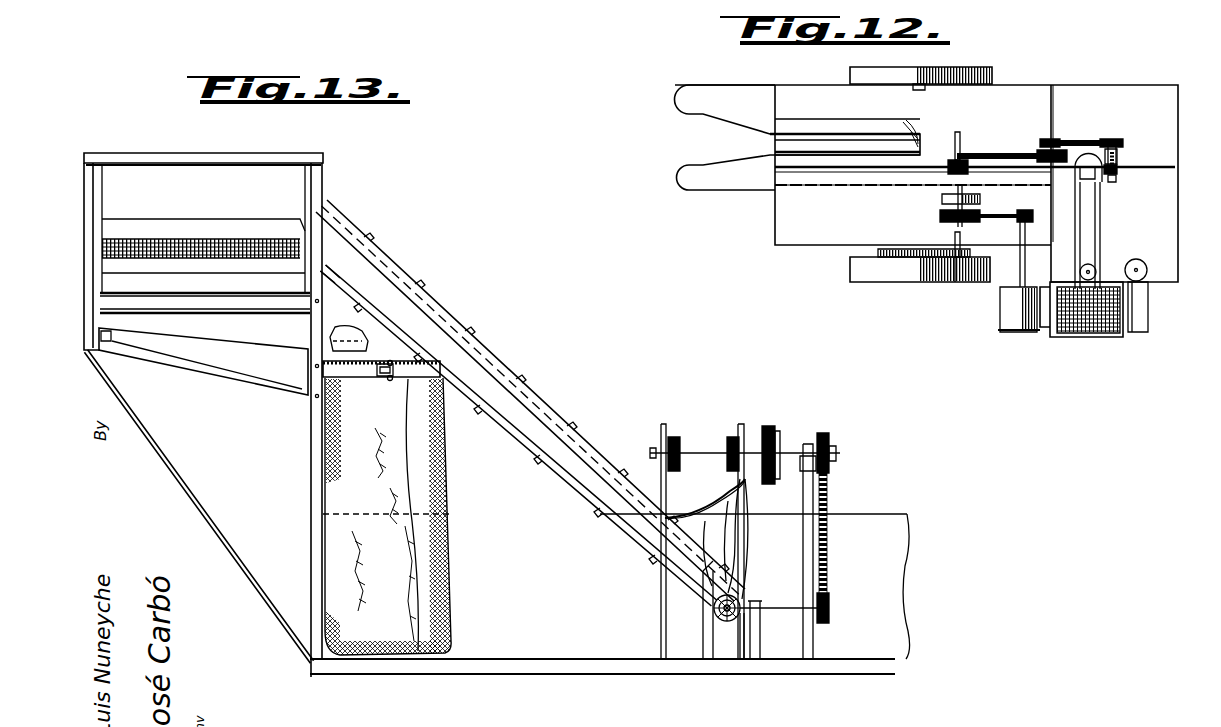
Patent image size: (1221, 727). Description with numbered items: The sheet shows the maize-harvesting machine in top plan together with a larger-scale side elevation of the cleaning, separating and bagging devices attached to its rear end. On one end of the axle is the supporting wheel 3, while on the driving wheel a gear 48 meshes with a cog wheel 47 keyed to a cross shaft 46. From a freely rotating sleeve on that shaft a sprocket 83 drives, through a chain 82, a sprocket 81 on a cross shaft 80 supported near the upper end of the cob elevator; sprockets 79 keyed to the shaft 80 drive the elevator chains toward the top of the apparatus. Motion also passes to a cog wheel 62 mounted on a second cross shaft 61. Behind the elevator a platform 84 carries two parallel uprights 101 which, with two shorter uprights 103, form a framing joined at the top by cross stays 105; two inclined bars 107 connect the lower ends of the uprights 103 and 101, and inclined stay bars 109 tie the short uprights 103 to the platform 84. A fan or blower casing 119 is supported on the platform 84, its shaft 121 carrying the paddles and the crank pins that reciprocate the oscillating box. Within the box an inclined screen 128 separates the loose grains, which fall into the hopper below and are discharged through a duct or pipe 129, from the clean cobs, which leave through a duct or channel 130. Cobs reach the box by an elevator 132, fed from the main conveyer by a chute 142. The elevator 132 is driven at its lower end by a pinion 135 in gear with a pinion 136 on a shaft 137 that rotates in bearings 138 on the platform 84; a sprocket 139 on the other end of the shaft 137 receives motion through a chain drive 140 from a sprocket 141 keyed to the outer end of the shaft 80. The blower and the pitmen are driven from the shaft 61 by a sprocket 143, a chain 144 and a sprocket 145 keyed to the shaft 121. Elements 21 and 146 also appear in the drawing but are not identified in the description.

In FIG. 12, the wheel 3 is at (990, 67).
In FIG. 12, the roller 21 is at (892, 281).
In FIG. 12, the cross shaft 46 is at (960, 140).
In FIG. 12, the cog wheel 47 is at (960, 281).
In FIG. 12, the gear 48 is at (892, 247).
In FIG. 12, the cross shaft 61 is at (970, 186).
In FIG. 12, the cog wheel 62 is at (940, 197).
In FIG. 13, the sprockets 79 is at (730, 438).
In FIG. 12, the cross shaft 80 is at (1052, 184).
In FIG. 13, the sprocket 81 is at (781, 432).
In FIG. 12, the sprocket 81 is at (1045, 148).
In FIG. 13, the chain 82 is at (768, 424).
In FIG. 12, the chain 82 is at (1010, 154).
In FIG. 12, the sprocket 83 is at (957, 156).
In FIG. 13, the platform 84 is at (573, 658).
In FIG. 12, the platform 84 is at (1139, 92).
In FIG. 13, the uprights 101 is at (312, 456).
In FIG. 13, the uprights 103 is at (88, 290).
In FIG. 13, the cross stays 105 is at (250, 160).
In FIG. 13, the inclined bars 107 is at (222, 383).
In FIG. 13, the inclined stay bars 109 is at (195, 498).
In FIG. 12, the fan or blower casing 119 is at (1006, 310).
In FIG. 12, the shaft 121 is at (1020, 284).
In FIG. 13, the inclined screen 128 is at (150, 235).
In FIG. 12, the inclined screen 128 is at (1096, 332).
In FIG. 13, the duct or pipe 129 is at (368, 330).
In FIG. 13, the duct or channel 130 is at (365, 338).
In FIG. 12, the duct or channel 130 is at (1148, 296).
In FIG. 13, the elevator 132 is at (507, 450).
In FIG. 12, the elevator 132 is at (1098, 222).
In FIG. 13, the pinion 135 is at (716, 627).
In FIG. 12, the pinion 135 is at (1118, 178).
In FIG. 13, the pinion 136 is at (740, 596).
In FIG. 12, the pinion 136 is at (1120, 167).
In FIG. 13, the shaft 137 is at (775, 612).
In FIG. 12, the shaft 137 is at (1120, 152).
In FIG. 13, the bearings 138 is at (806, 640).
In FIG. 13, the sprocket 139 is at (832, 601).
In FIG. 12, the sprocket 139 is at (1118, 140).
In FIG. 13, the chain drive 140 is at (827, 434).
In FIG. 12, the chain drive 140 is at (1110, 137).
In FIG. 13, the sprocket 141 is at (832, 442).
In FIG. 12, the sprocket 141 is at (1053, 136).
In FIG. 13, the chute 142 is at (744, 562).
In FIG. 12, the chute 142 is at (1118, 134).
In FIG. 12, the sprocket 143 is at (940, 214).
In FIG. 12, the chain 144 is at (1002, 228).
In FIG. 12, the sprocket 145 is at (1025, 210).
In FIG. 13, the clamp 146 is at (409, 372).
In FIG. 12, the clamp 146 is at (1148, 255).